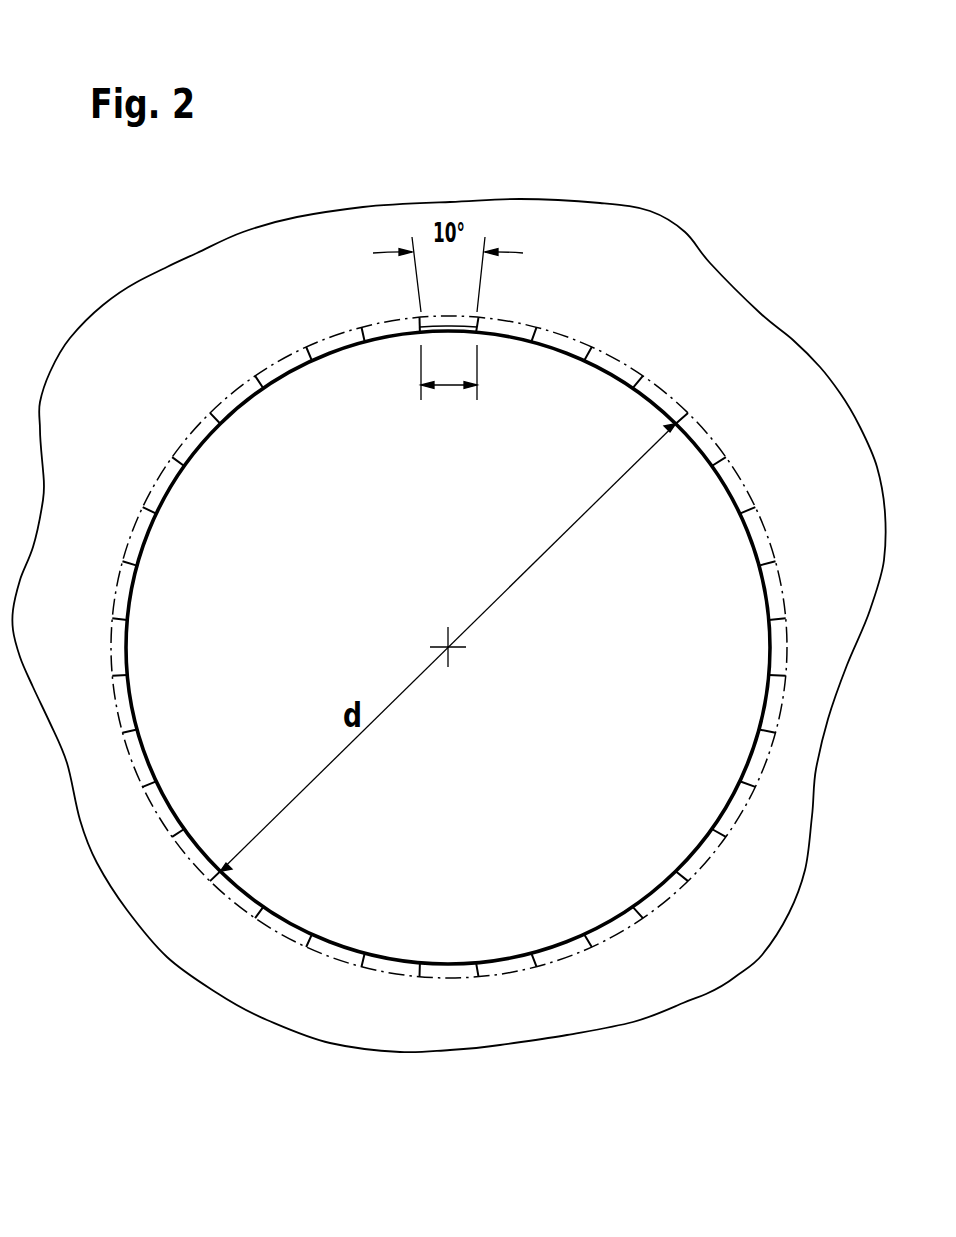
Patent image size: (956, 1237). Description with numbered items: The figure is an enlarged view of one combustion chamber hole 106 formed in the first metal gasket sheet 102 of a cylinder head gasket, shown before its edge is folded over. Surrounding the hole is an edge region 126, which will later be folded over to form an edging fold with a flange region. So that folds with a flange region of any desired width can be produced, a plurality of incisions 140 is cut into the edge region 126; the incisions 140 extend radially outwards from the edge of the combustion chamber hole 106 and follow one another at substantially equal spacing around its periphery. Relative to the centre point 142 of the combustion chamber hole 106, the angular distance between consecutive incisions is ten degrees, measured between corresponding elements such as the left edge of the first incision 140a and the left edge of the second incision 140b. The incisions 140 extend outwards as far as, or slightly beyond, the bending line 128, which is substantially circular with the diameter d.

The first metal gasket sheet 102 is at (723, 948).
The combustion chamber hole 106 is at (667, 475).
The edge region 126 is at (174, 457).
The bending line 128 is at (640, 368).
The incisions 140 is at (757, 537).
The first incision 140a is at (420, 327).
The second incision 140b is at (477, 327).
The centre point 142 is at (445, 646).